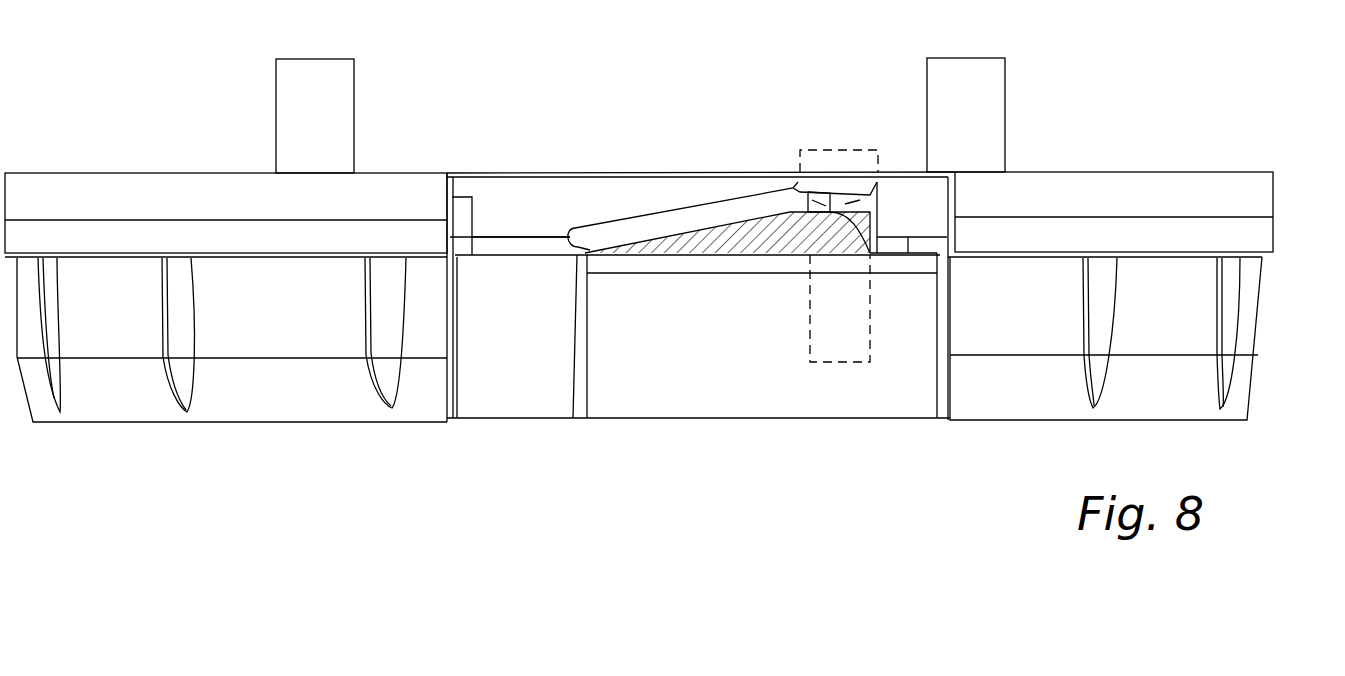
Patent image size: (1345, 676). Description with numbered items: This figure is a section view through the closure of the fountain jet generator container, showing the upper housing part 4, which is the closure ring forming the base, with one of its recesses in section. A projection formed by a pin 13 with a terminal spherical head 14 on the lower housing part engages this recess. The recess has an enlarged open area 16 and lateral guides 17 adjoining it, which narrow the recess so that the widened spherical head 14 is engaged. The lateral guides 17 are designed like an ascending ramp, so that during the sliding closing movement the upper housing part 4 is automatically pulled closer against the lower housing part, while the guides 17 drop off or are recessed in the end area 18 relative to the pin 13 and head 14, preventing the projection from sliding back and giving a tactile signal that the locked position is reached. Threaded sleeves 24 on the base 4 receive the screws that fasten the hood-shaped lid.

The upper housing part 4 is at (1245, 200).
The pin 13 is at (820, 323).
The spherical head 14 is at (827, 152).
The enlarged open area 16 is at (530, 227).
The lateral guide 17 is at (733, 232).
The end area 18 is at (840, 213).
The threaded sleeve 24 is at (325, 107).